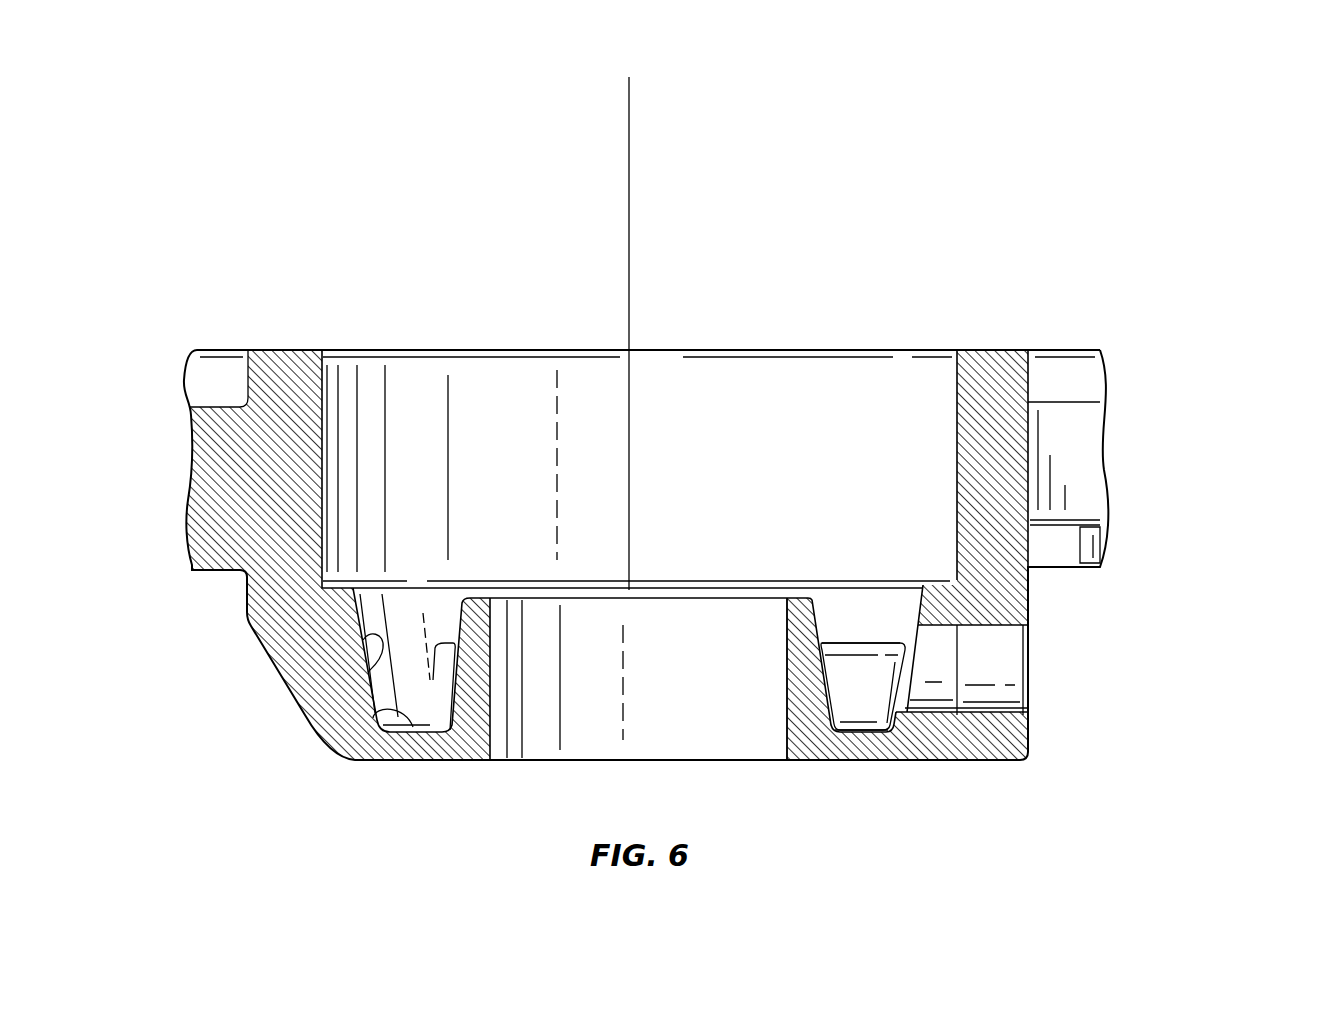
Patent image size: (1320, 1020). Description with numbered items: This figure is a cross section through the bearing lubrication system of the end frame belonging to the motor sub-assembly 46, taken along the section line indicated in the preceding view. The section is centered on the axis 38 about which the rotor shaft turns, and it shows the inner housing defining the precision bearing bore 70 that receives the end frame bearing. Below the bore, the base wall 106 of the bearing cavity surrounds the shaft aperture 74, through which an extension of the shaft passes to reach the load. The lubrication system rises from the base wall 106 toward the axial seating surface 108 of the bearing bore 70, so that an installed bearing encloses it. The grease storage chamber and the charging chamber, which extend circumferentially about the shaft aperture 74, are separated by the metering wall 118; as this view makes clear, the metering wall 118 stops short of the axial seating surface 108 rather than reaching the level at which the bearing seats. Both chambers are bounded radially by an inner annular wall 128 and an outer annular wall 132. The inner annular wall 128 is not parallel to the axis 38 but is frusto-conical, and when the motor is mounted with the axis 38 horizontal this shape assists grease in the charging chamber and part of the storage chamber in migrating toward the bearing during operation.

The axis 38 is at (633, 133).
The sub-assembly 46 is at (533, 340).
The bearing bore 70 is at (953, 442).
The shaft aperture 74 is at (783, 685).
The base wall 106 is at (380, 718).
The axial seating surface 108 is at (925, 585).
The metering wall 118 is at (867, 643).
The inner annular wall 128 is at (440, 658).
The outer annular wall 132 is at (373, 665).